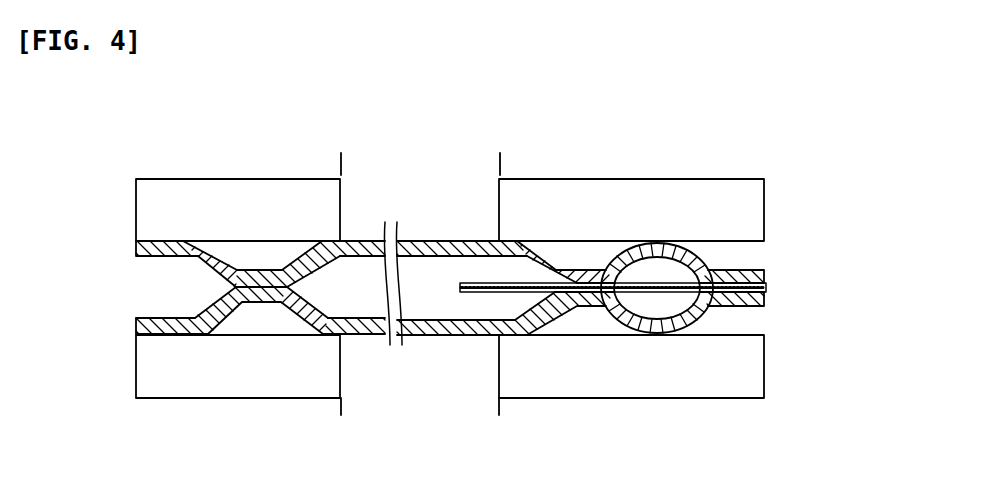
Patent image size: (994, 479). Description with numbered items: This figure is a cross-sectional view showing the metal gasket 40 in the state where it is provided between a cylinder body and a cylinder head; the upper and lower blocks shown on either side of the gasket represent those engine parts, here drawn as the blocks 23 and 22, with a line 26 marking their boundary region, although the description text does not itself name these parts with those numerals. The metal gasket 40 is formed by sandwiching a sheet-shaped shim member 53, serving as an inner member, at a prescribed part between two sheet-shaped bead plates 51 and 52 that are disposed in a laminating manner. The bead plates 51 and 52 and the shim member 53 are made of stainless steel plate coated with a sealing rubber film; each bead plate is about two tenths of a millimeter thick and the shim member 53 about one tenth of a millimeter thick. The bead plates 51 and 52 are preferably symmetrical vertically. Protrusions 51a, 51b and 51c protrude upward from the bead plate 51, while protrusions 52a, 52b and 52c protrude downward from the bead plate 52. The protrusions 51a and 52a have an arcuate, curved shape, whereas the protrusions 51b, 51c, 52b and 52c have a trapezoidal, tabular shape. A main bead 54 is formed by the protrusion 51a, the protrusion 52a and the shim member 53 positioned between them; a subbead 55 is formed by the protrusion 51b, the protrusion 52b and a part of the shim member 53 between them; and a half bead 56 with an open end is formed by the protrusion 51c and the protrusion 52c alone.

The lower substrate 22 is at (761, 372).
The upper substrate 23 is at (758, 213).
The boundary line 26 is at (497, 394).
The metal gasket 40 is at (866, 268).
The bead plate 51 is at (445, 262).
The protrusion 51a is at (704, 255).
The protrusion 51b is at (373, 240).
The protrusion 51c is at (136, 248).
The bead plate 52 is at (445, 341).
The protrusion 52a is at (703, 321).
The protrusion 52b is at (375, 336).
The protrusion 52c is at (136, 327).
The shim member 53 is at (767, 288).
The main bead 54 is at (660, 243).
The subbead 55 is at (447, 240).
The half bead 56 is at (176, 242).